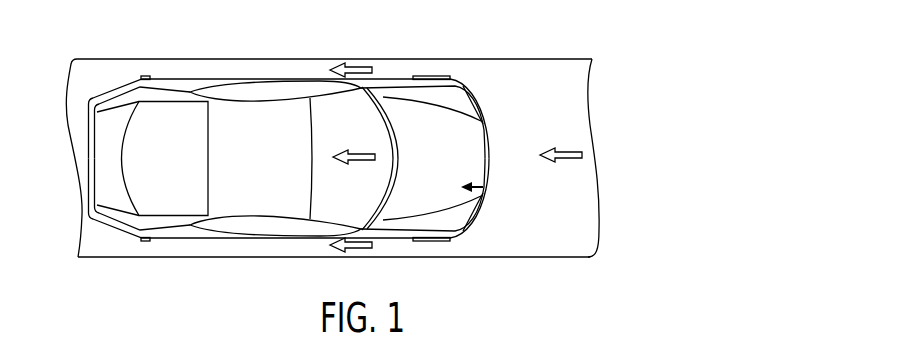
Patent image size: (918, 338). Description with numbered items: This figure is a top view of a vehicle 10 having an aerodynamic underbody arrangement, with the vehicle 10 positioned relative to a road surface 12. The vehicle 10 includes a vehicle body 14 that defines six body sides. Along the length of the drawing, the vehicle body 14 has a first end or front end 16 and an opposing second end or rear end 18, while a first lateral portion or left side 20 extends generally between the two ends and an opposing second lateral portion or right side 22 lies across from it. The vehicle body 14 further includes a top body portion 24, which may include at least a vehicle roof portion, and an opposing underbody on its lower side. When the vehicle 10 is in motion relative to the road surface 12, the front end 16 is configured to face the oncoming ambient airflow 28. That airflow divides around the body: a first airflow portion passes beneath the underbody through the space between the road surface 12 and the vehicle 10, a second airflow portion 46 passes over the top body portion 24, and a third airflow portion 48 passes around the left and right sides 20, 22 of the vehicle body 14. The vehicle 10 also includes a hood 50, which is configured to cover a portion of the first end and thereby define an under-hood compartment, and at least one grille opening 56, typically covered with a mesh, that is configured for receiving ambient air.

The vehicle 10 is at (535, 290).
The road surface 12 is at (550, 59).
The vehicle body 14 is at (287, 158).
The front end 16 is at (482, 115).
The rear end 18 is at (88, 147).
The left side 20 is at (278, 80).
The right side 22 is at (292, 240).
The top body portion 24 is at (262, 117).
The ambient airflow 28 is at (577, 153).
The second airflow portion 46 is at (358, 148).
The third airflow portion 48 is at (353, 65).
The hood 50 is at (432, 158).
The grille opening 56 is at (490, 163).